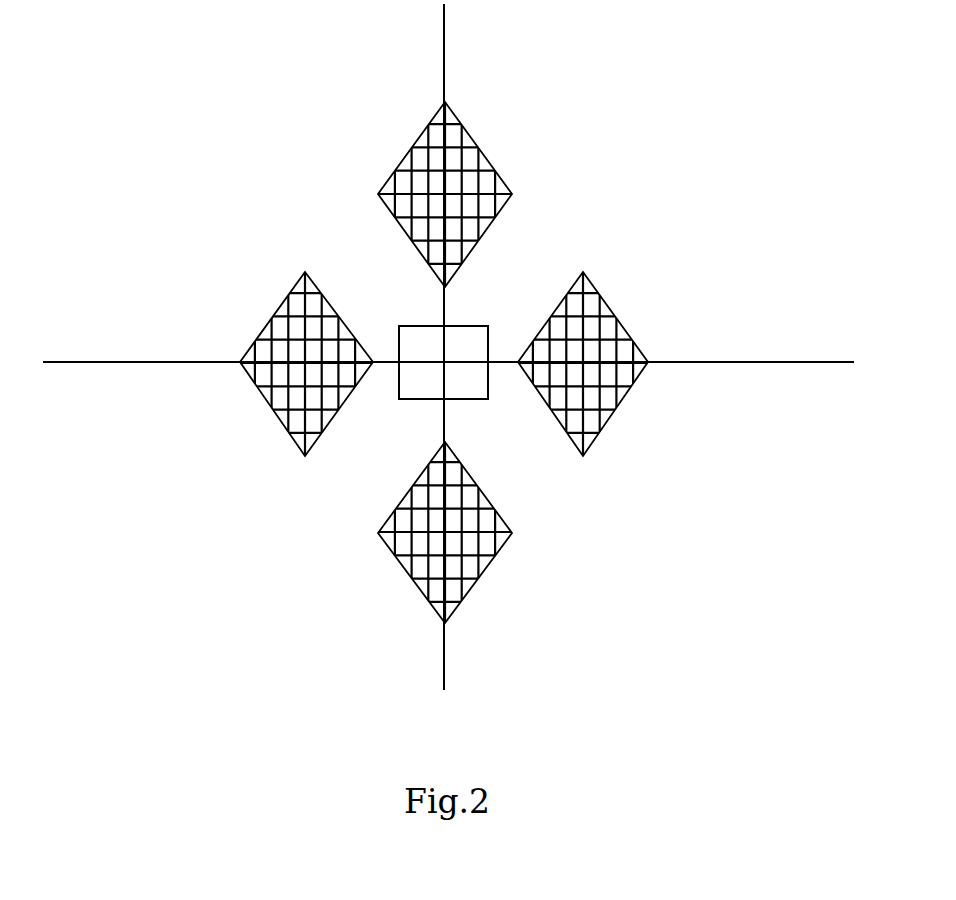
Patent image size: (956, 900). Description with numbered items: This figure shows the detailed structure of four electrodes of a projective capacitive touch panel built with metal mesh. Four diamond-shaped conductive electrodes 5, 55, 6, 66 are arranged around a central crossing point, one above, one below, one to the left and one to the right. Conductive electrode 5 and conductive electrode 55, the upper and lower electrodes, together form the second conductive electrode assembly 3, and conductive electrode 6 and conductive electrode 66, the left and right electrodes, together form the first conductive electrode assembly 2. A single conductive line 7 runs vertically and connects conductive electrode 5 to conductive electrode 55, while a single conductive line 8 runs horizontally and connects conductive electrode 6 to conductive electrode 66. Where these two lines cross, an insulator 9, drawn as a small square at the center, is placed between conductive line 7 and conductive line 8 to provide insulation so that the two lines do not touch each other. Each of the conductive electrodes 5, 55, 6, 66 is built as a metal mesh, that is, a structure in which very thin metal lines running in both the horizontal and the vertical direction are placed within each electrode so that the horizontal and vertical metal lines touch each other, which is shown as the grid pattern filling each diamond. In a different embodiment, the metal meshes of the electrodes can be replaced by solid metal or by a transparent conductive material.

The first conductive electrode assembly 2 is at (230, 327).
The second conductive electrode assembly 3 is at (397, 108).
The conductive electrode 5 is at (470, 180).
The conductive electrode 6 is at (281, 330).
The conductive electrode 66 is at (610, 350).
The conductive electrode 55 is at (512, 607).
The conductive line 7 is at (454, 418).
The conductive line 8 is at (505, 348).
The insulator 9 is at (412, 380).